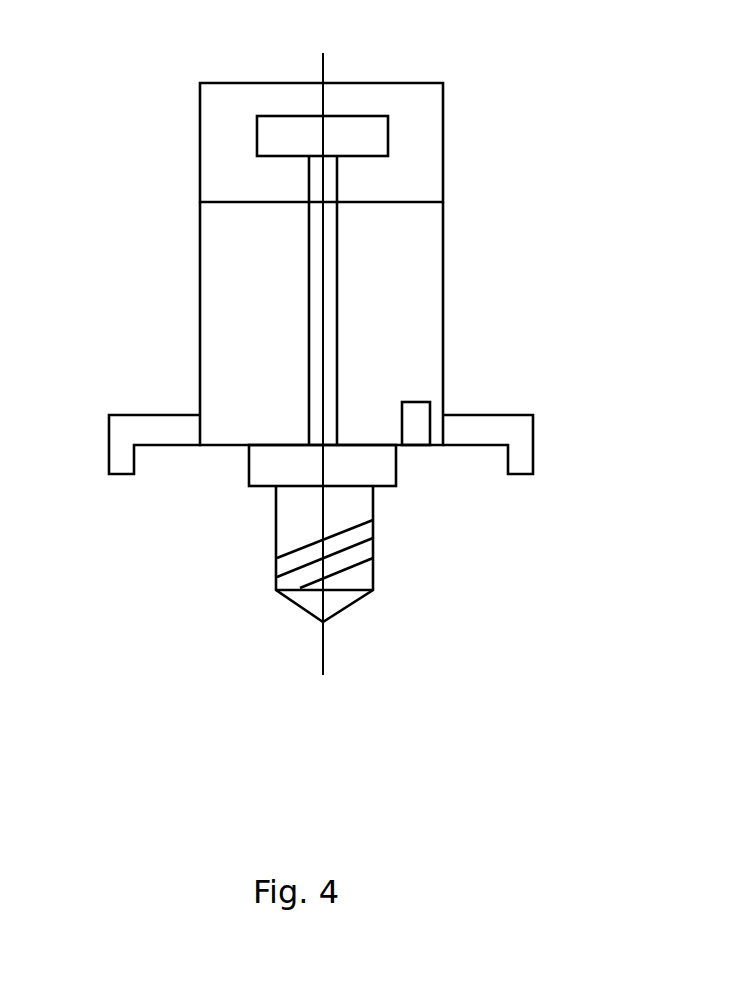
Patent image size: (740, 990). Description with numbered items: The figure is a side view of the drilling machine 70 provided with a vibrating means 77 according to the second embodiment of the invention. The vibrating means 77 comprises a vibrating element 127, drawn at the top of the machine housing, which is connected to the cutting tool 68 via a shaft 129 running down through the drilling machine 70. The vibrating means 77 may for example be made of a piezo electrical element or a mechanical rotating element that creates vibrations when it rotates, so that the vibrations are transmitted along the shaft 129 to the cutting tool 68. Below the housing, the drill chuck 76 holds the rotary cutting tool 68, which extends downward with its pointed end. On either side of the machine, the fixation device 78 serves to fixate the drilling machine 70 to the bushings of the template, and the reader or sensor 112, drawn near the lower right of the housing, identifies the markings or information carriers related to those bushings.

The cutting tool 68 is at (276, 568).
The drilling machine 70 is at (443, 278).
The drill chuck 76 is at (249, 462).
The vibrating means 77 is at (443, 124).
The fixation device 78 is at (107, 443).
The sensor 112 is at (420, 445).
The vibrating element 127 is at (367, 117).
The shaft 129 is at (308, 288).